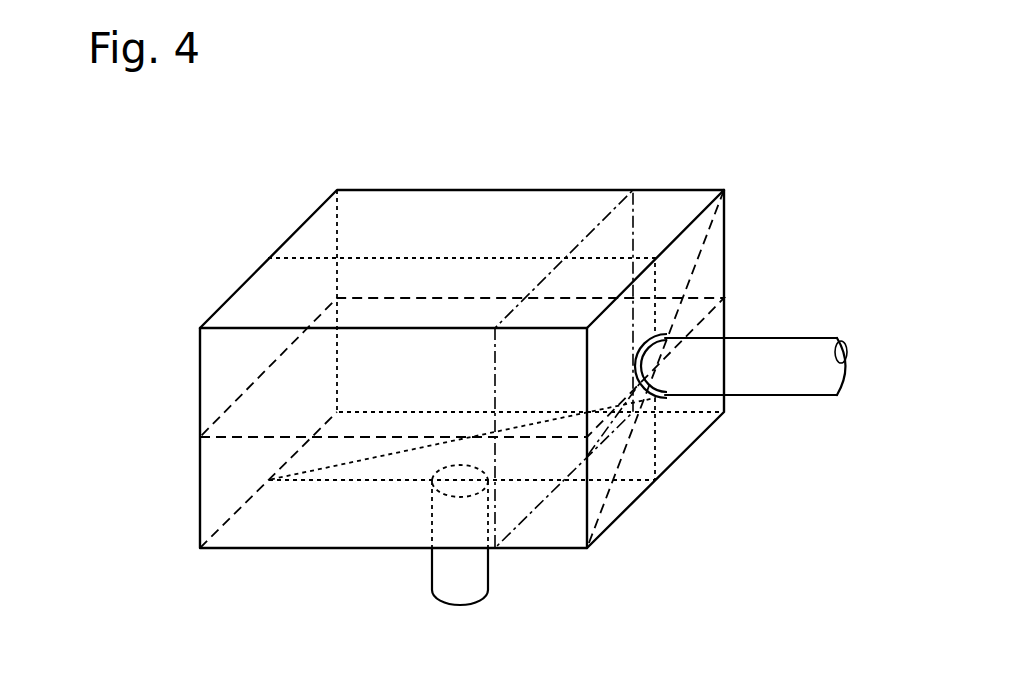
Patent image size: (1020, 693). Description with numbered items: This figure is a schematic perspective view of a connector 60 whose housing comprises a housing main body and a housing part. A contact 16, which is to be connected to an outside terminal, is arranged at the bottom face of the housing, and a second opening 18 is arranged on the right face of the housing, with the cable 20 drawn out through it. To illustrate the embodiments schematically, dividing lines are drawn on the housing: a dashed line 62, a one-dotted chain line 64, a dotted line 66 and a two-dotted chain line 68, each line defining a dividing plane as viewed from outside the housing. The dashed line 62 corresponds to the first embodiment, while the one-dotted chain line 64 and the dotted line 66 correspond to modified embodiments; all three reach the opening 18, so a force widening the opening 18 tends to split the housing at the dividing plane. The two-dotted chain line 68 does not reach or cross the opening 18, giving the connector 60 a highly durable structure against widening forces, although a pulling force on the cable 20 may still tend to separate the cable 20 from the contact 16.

The contact 16 is at (460, 587).
The opening 18 is at (643, 400).
The cable 20 is at (788, 352).
The connector 60 is at (628, 133).
The dashed line 62 is at (222, 440).
The one-dotted chain line 64 is at (707, 242).
The dotted line 66 is at (458, 258).
The two-dotted chain line 68 is at (596, 225).